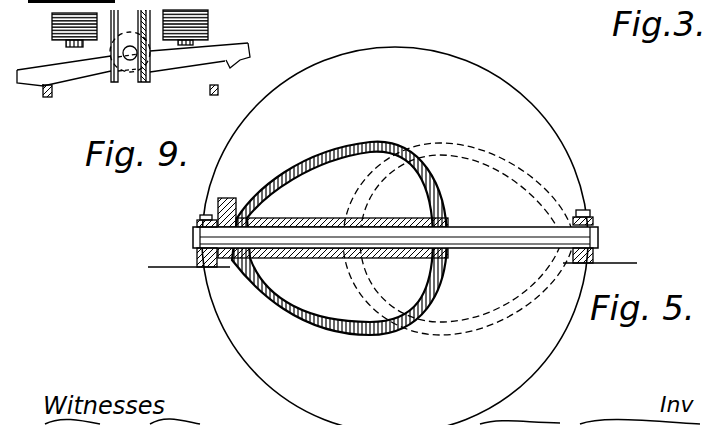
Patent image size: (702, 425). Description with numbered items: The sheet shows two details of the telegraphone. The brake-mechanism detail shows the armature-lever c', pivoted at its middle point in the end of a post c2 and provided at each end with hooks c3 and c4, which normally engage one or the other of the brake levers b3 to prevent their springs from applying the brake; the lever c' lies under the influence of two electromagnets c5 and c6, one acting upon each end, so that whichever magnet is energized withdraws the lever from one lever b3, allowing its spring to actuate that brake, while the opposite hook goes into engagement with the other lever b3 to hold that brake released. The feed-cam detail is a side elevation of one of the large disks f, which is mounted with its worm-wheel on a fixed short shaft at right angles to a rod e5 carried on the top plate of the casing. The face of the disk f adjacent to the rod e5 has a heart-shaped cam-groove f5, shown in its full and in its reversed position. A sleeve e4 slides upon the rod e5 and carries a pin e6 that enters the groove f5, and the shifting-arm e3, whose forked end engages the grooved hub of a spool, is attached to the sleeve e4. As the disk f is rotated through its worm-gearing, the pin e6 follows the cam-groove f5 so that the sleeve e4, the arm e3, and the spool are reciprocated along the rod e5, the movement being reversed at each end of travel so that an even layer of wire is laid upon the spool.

In FIG. 9, the electromagnet c6 is at (52, 30).
In FIG. 9, the electromagnet c5 is at (262, 13).
In FIG. 9, the post c2 is at (130, 61).
In FIG. 9, the armature-lever c' is at (132, 68).
In FIG. 9, the hook c4 is at (22, 88).
In FIG. 9, the hook c3 is at (251, 52).
In FIG. 9, the lever b3 is at (52, 95).
In FIG. 5, the disk f is at (395, 236).
In FIG. 5, the cam-groove f5 is at (352, 348).
In FIG. 5, the rod e5 is at (522, 262).
In FIG. 5, the sleeve e4 is at (327, 258).
In FIG. 5, the shifting-arm e3 is at (228, 197).
In FIG. 5, the pin e6 is at (558, 275).